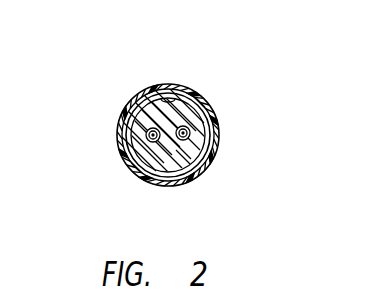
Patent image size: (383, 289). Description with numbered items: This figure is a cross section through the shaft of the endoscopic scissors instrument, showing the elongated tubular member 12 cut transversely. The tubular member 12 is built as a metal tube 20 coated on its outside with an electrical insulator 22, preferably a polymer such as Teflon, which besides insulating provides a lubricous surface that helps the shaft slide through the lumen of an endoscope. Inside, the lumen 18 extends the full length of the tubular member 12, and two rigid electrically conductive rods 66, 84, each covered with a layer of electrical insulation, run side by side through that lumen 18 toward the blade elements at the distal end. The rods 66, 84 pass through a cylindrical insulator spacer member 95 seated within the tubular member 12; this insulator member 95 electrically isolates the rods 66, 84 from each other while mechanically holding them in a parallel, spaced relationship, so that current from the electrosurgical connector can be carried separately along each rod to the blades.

The elongated tubular member 12 is at (262, 59).
The lumen 18 is at (151, 96).
The metal tube 20 is at (119, 157).
The electrical insulator 22 is at (122, 127).
The rigid electrically conductive rod 66 is at (184, 133).
The rigid electrically conductive rod 84 is at (152, 142).
The cylindrical insulator spacer member 95 is at (180, 158).